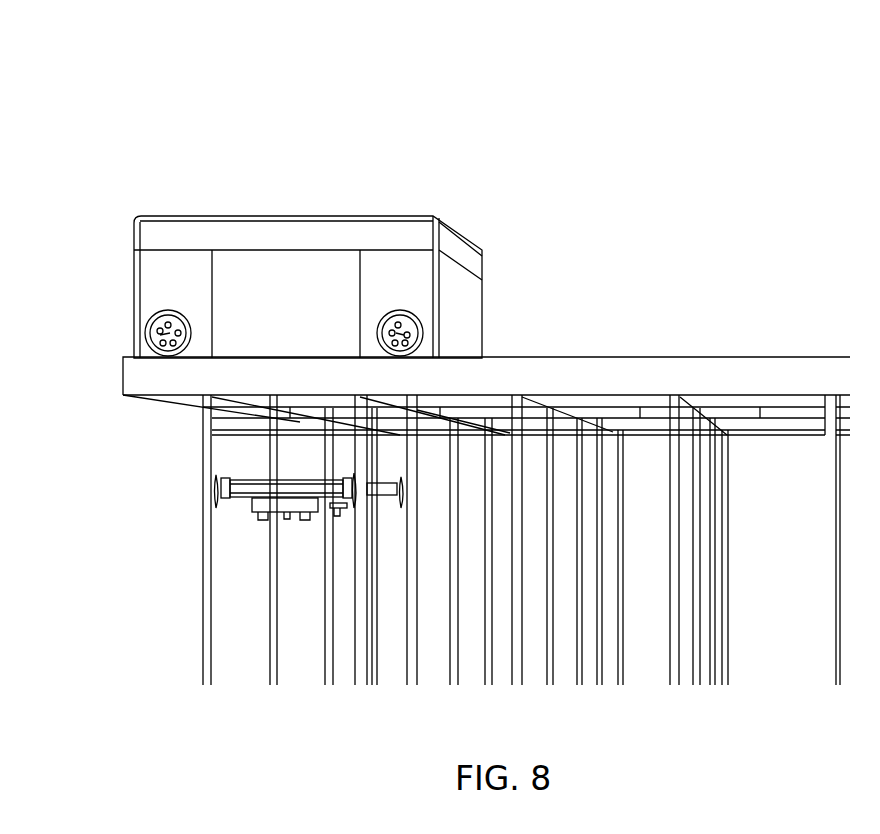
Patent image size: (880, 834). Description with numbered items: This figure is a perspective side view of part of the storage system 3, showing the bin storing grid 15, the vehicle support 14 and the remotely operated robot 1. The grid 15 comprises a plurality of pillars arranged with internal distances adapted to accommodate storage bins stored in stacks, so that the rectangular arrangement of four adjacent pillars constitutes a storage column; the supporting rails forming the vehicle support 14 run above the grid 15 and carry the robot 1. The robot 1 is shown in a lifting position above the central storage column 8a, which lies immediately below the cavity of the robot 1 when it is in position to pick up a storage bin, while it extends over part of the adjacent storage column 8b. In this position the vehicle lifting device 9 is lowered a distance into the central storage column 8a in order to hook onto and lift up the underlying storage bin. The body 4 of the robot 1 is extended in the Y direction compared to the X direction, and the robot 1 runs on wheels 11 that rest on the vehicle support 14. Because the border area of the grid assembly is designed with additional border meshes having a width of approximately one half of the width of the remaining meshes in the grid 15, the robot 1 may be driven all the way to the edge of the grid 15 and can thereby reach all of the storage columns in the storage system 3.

The robot 1 is at (330, 186).
The storage system 3 is at (693, 104).
The body 4 is at (102, 256).
The wheel 11 is at (160, 332).
The vehicle support 14 is at (108, 384).
The bin storing structure or grid 15 is at (140, 517).
The vehicle lifting device 9 is at (244, 498).
The central storage column 8a is at (521, 540).
The adjacent storage column 8b is at (526, 546).